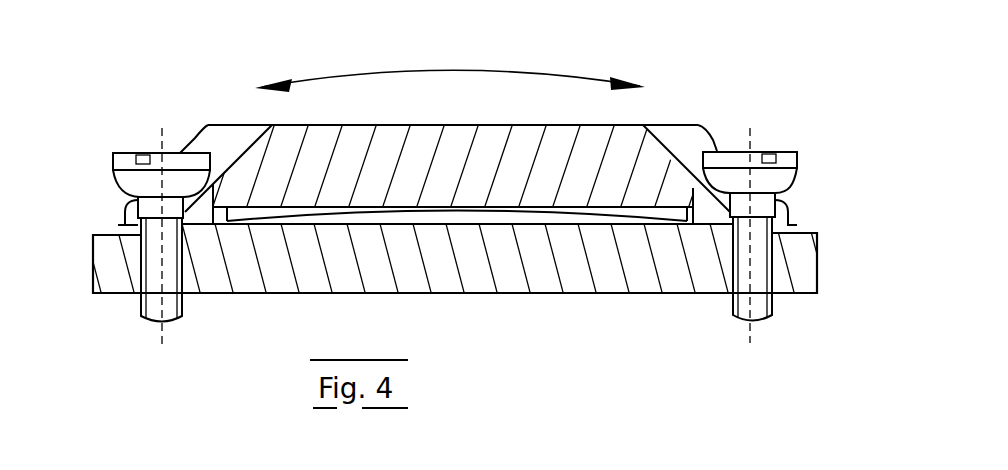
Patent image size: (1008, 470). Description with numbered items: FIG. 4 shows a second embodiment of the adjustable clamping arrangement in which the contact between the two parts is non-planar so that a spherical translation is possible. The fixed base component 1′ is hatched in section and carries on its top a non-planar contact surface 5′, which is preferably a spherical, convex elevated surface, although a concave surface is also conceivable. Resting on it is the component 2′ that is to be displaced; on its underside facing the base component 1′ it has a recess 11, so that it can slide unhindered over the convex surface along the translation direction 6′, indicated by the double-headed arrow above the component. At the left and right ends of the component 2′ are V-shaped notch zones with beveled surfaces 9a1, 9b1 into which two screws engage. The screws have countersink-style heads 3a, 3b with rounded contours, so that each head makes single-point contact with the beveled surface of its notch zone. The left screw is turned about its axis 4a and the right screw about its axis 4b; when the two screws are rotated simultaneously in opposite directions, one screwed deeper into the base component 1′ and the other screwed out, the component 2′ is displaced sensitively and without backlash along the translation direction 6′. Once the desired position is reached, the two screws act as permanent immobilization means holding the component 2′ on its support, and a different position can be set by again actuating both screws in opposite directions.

The fixed base component 1′ is at (612, 225).
The component to be displaced 2′ is at (497, 160).
The screw head 3a is at (180, 150).
The screw head 3b is at (741, 150).
The axis of left screw 4a is at (162, 335).
The axis of right screw 4b is at (748, 340).
The non-planar contact surface 5′ is at (797, 235).
The translation direction 6′ is at (528, 72).
The beveled surface of V-shaped notch zone 9a1 is at (223, 140).
The beveled surface of V-shaped notch zone 9b1 is at (695, 140).
The recess 11 is at (248, 216).